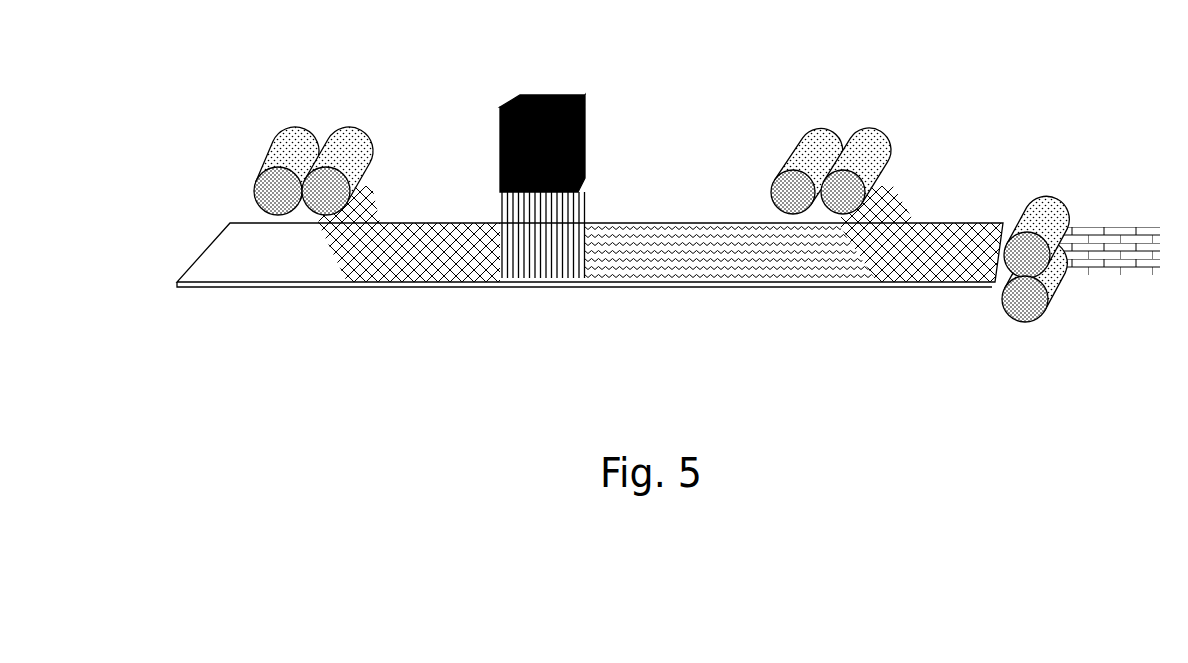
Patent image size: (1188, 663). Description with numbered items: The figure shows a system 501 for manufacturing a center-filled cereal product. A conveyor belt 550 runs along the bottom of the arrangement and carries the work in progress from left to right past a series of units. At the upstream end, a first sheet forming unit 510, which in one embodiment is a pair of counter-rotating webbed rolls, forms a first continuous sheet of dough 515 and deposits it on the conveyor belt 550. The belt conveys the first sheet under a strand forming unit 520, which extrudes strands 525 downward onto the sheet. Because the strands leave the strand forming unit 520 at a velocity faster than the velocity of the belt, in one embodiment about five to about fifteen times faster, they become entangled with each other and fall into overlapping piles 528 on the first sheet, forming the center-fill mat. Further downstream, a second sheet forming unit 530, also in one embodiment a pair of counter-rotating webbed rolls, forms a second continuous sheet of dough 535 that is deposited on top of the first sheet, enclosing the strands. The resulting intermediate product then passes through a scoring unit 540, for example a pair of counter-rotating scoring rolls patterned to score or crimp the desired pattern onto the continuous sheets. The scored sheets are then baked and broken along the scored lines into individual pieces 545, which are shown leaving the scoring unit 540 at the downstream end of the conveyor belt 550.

The system 501 is at (654, 353).
The first sheet forming unit 510 is at (342, 142).
The first continuous sheet of dough 515 is at (352, 220).
The strand forming unit 520 is at (548, 92).
The strands 525 is at (568, 213).
The overlapping piles 528 is at (595, 260).
The second sheet forming unit 530 is at (848, 133).
The second continuous sheet of dough 535 is at (883, 222).
The scoring unit 540 is at (1060, 220).
The individual pieces 545 is at (1090, 260).
The conveyor belt 550 is at (283, 275).